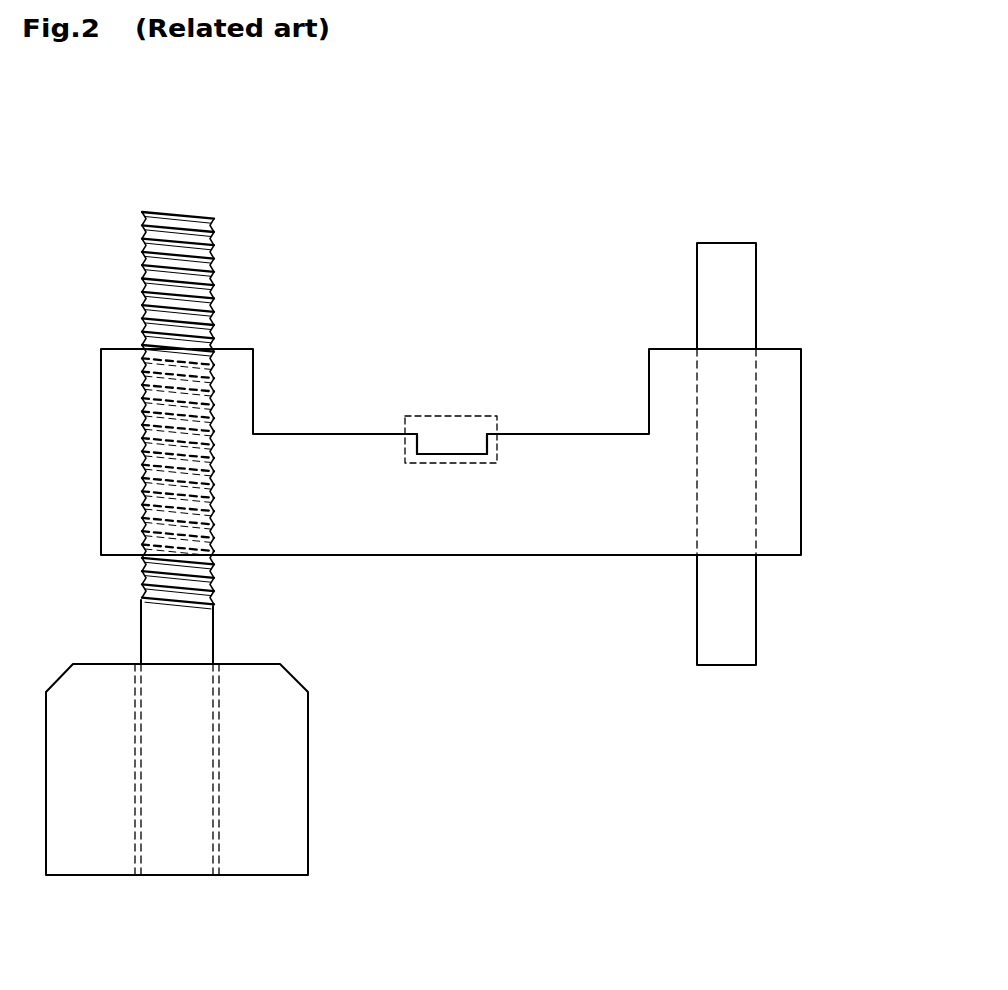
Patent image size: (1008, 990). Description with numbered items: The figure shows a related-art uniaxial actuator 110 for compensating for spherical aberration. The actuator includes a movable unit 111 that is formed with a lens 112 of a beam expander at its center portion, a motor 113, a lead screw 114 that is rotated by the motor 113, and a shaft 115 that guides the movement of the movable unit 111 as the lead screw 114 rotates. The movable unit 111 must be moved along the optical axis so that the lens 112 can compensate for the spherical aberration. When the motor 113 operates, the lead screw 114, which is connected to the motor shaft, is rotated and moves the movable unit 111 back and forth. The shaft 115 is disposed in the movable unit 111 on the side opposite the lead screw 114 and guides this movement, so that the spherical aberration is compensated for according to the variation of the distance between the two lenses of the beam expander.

The uniaxial actuator 110 is at (721, 178).
The movable unit 111 is at (623, 538).
The lens 112 is at (450, 424).
The motor 113 is at (294, 808).
The lead screw 114 is at (183, 213).
The shaft 115 is at (747, 291).